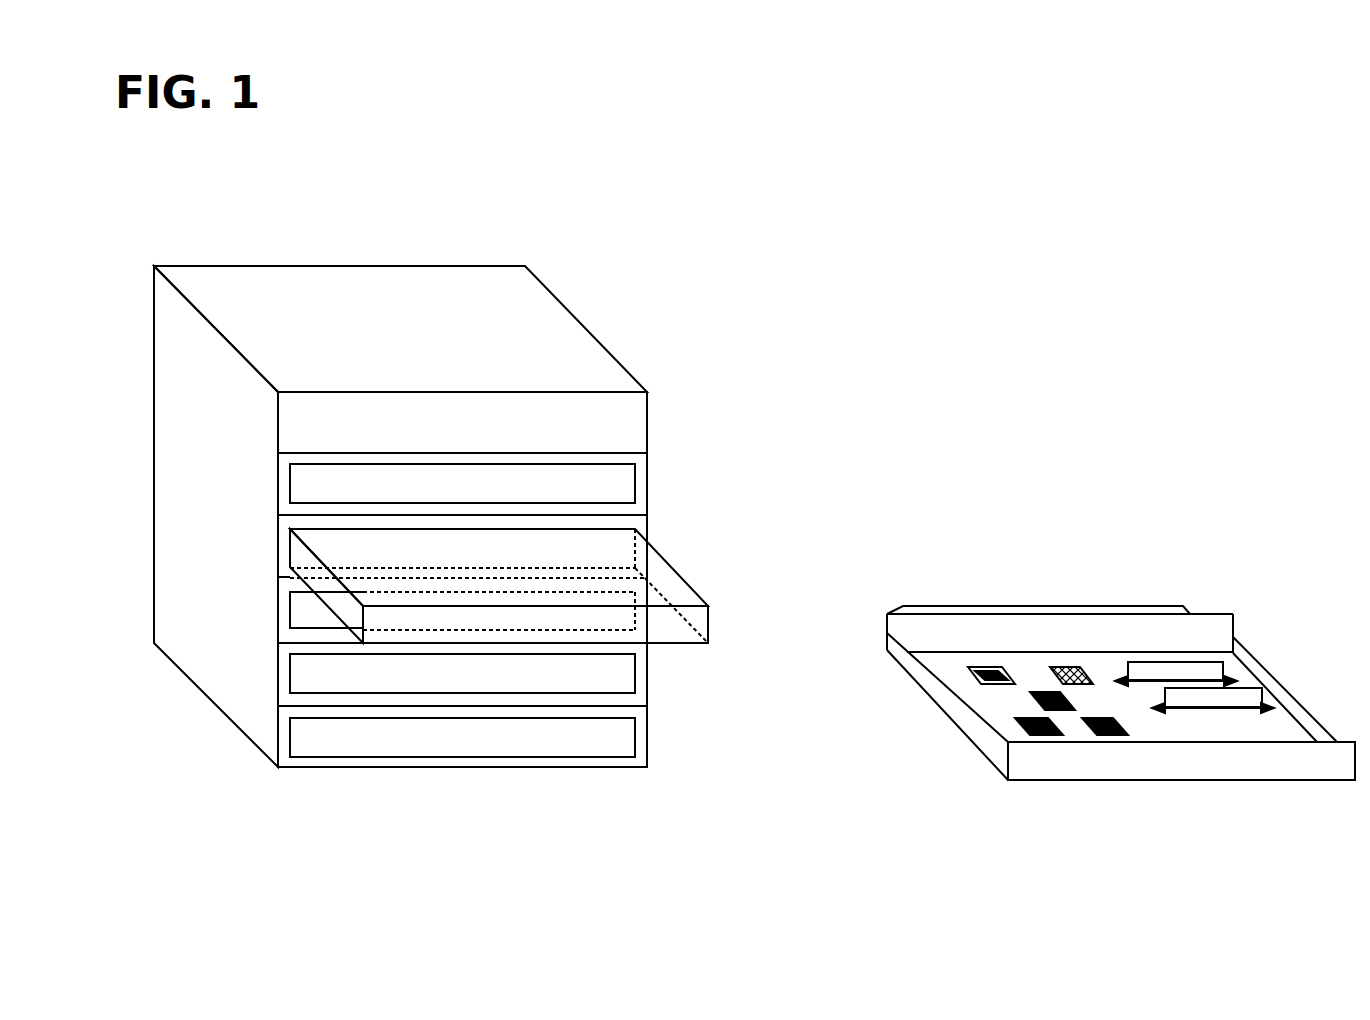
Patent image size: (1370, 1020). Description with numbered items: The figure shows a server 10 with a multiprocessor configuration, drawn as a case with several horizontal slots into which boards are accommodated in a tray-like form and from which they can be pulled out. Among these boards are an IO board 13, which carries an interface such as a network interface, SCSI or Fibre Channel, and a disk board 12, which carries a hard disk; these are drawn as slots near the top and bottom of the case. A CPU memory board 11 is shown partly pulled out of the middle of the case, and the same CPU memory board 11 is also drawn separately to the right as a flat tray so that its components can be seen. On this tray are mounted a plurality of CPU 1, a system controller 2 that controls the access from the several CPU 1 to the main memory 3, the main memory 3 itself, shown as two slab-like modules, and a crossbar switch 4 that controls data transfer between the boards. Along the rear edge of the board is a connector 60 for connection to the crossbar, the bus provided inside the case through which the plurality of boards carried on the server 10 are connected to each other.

The CPU 1 is at (1022, 727).
The system controller 2 is at (983, 667).
The main memory 3 is at (1228, 660).
The crossbar switch 4 is at (1077, 667).
The server 10 is at (377, 266).
The CPU memory board 11 is at (947, 717).
The disk board 12 is at (635, 742).
The IO board 13 is at (635, 485).
The connector 60 is at (1140, 608).